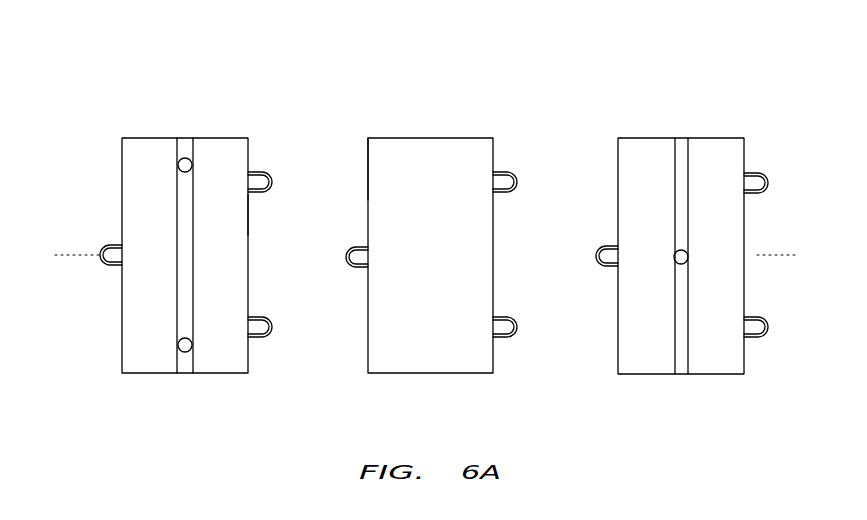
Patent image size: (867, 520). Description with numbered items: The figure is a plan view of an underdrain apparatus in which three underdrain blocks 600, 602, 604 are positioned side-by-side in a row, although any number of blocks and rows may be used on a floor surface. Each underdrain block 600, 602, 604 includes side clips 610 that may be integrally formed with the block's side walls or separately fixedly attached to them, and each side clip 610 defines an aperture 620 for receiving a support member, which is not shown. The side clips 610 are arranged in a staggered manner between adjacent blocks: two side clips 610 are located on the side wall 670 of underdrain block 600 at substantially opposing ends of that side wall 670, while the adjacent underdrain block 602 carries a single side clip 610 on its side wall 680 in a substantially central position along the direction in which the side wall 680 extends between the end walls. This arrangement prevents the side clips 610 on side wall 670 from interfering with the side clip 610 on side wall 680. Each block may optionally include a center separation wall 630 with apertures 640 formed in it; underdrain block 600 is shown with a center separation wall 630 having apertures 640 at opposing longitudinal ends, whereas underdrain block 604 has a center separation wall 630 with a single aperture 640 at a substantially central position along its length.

The underdrain block 600 is at (117, 60).
The underdrain block 602 is at (388, 62).
The underdrain block 604 is at (653, 62).
The side clip 610 is at (106, 246).
The aperture 620 is at (252, 179).
The center separation wall 630 is at (177, 196).
The aperture 640 is at (188, 159).
The side wall 670 is at (250, 220).
The side wall 680 is at (368, 146).